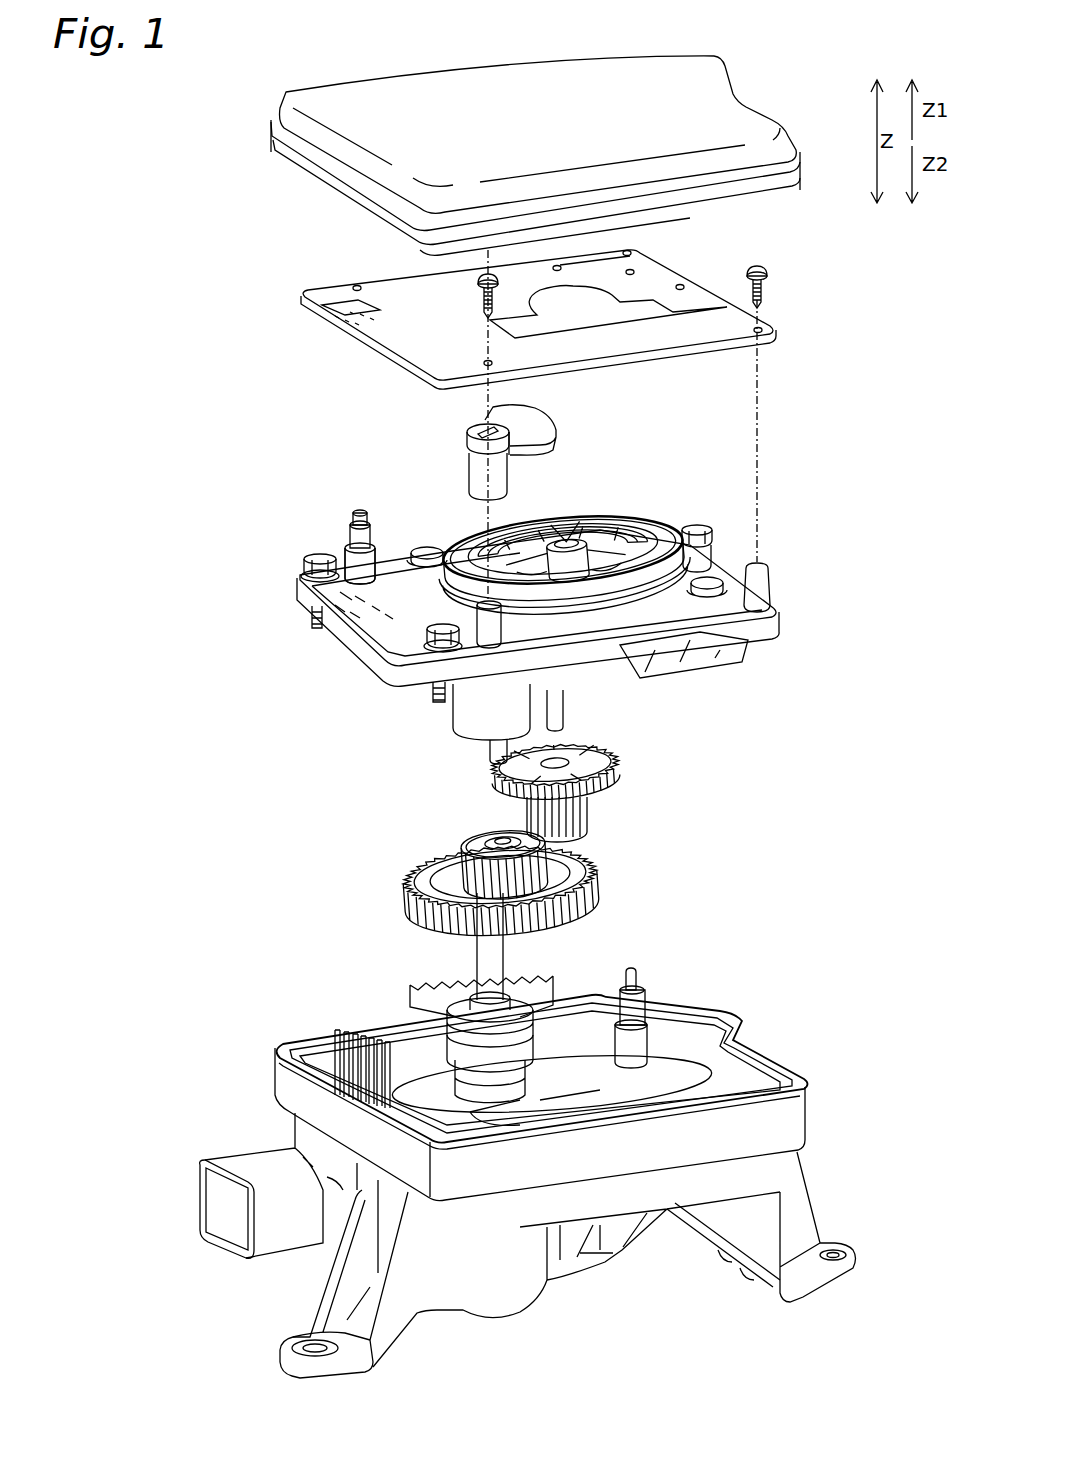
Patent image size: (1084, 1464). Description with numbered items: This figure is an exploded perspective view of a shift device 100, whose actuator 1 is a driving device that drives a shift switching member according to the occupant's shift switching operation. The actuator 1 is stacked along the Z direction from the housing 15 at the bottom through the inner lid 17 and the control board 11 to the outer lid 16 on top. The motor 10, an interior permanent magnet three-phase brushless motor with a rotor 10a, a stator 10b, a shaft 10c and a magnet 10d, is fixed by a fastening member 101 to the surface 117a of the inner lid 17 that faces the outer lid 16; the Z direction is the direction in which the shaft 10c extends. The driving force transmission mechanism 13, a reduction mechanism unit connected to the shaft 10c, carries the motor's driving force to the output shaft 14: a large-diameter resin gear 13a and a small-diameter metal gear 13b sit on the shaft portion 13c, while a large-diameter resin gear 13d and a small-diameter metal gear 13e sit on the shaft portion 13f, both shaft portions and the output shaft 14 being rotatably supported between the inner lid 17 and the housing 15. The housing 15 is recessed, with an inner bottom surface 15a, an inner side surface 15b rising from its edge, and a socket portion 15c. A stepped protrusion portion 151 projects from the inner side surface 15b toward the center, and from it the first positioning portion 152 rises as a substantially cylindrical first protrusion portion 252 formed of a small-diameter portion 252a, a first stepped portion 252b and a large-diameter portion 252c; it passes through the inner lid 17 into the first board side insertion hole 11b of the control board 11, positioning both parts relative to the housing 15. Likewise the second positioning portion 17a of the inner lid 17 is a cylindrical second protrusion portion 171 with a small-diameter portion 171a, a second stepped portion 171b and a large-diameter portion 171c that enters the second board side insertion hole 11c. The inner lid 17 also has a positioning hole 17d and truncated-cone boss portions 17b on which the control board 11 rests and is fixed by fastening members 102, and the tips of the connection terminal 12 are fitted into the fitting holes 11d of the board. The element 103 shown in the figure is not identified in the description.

The shift device 100 is at (114, 125).
The actuator 1 is at (241, 553).
The motor 10 is at (561, 514).
The rotor 10a is at (612, 528).
The stator 10b is at (650, 538).
The shaft 10c is at (552, 538).
The magnet 10d is at (567, 538).
The fastening member 101 is at (709, 575).
The fastening member 102 is at (488, 276).
The bolt 103 is at (694, 528).
The control board 11 is at (311, 272).
The first board side insertion hole 11b is at (632, 254).
The second board side insertion hole 11c is at (362, 289).
The fitting holes 11d is at (322, 310).
The connection terminal 12 is at (334, 1030).
The driving force transmission mechanism 13 is at (514, 815).
The gear 13a is at (617, 768).
The gear 13b is at (590, 815).
The shaft portion 13c is at (567, 710).
The gear 13d is at (402, 880).
The gear 13e is at (455, 853).
The shaft portion 13f is at (490, 746).
The output shaft 14 is at (462, 957).
The housing 15 is at (510, 1177).
The inner bottom surface 15a is at (495, 1120).
The inner side surface 15b is at (705, 1032).
The socket portion 15c is at (226, 1165).
The protrusion portion 151 is at (720, 1085).
The first positioning portion 152 is at (660, 993).
The outer lid 16 is at (282, 106).
The inner lid 17 is at (550, 601).
The second positioning portion 17a is at (378, 502).
The boss portions 17b is at (772, 586).
The positioning hole 17d is at (325, 590).
The surface 117a is at (400, 627).
The second protrusion portion 171 is at (325, 515).
The small-diameter portion 171a is at (355, 512).
The second stepped portion 171b is at (348, 522).
The large-diameter portion 171c is at (352, 546).
The first protrusion portion 252 is at (538, 1002).
The small-diameter portion 252a is at (620, 985).
The first stepped portion 252b is at (612, 992).
The large-diameter portion 252c is at (613, 1040).